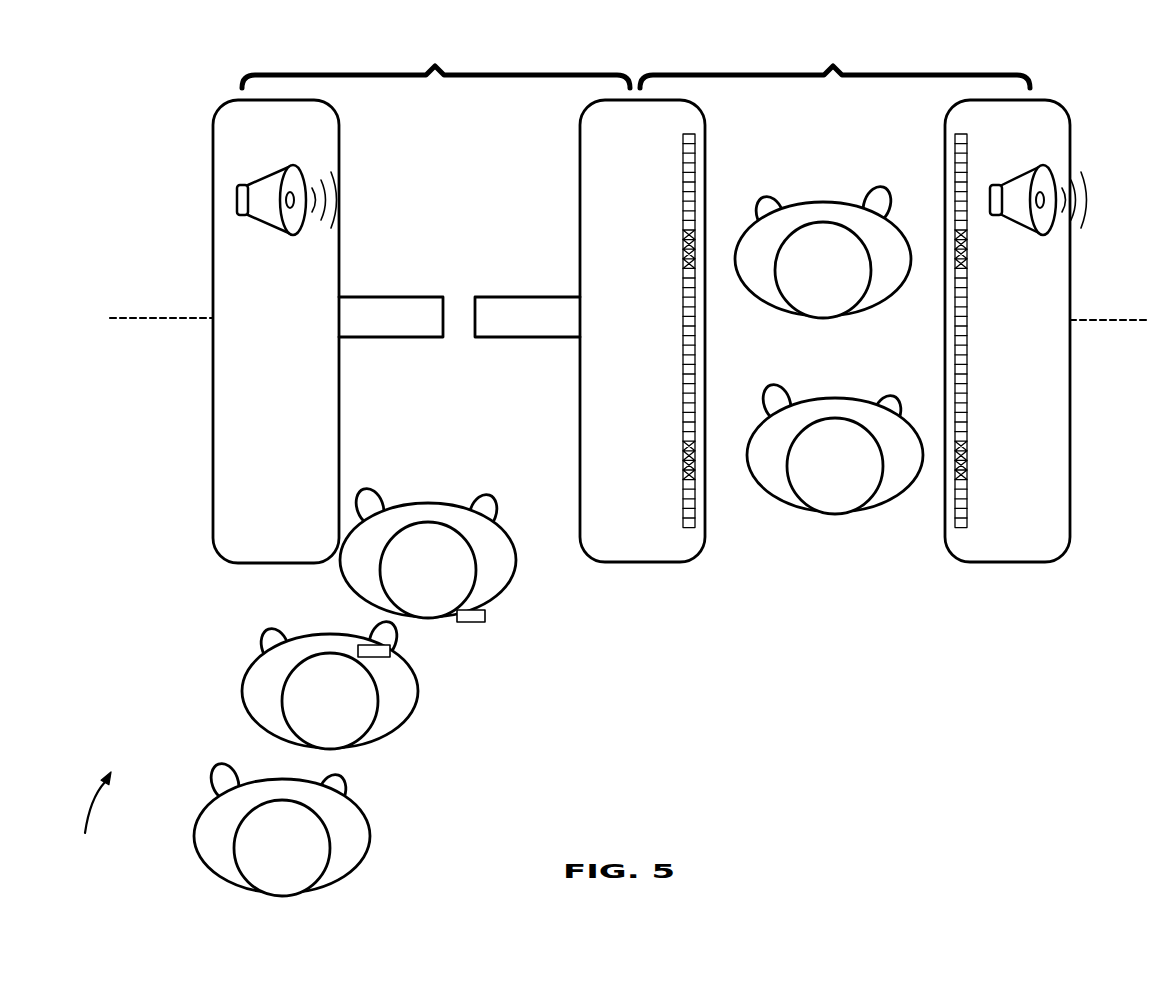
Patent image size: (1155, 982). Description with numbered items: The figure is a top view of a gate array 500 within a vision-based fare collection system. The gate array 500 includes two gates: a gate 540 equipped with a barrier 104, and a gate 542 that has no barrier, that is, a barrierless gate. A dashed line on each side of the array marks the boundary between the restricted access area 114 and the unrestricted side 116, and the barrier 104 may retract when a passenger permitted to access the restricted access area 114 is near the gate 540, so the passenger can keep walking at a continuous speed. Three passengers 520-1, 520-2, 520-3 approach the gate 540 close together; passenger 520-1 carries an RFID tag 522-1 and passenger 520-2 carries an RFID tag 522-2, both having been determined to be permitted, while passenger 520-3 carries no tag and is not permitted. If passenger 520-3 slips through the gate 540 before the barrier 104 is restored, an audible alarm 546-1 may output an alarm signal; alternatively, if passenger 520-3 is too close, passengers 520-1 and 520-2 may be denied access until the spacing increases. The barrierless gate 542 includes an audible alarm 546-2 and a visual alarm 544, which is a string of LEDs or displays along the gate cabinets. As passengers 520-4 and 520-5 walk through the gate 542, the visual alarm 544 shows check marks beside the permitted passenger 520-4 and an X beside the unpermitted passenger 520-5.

The gate array 500 is at (89, 817).
The barrier 104 is at (400, 338).
The restricted access area 114 is at (628, 303).
The second side 116 is at (648, 337).
The passenger 520-1 is at (505, 592).
The passenger 520-2 is at (418, 698).
The passenger 520-3 is at (370, 835).
The passenger 520-4 is at (858, 314).
The passenger 520-5 is at (877, 510).
The RFID tag 522-1 is at (486, 616).
The RFID tag 522-2 is at (391, 650).
The gate 540 is at (436, 63).
The gate 542 is at (835, 63).
The visual alarm 544 is at (696, 138).
The audible alarm 546-1 is at (276, 173).
The audible alarm 546-2 is at (1022, 173).